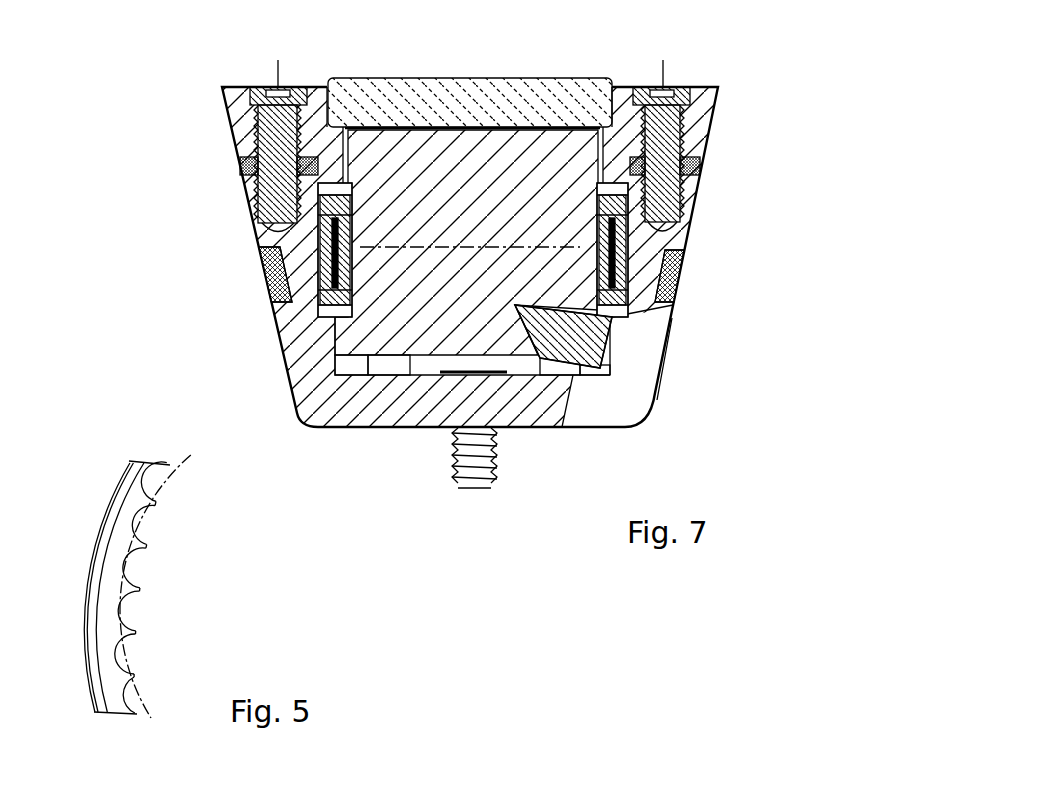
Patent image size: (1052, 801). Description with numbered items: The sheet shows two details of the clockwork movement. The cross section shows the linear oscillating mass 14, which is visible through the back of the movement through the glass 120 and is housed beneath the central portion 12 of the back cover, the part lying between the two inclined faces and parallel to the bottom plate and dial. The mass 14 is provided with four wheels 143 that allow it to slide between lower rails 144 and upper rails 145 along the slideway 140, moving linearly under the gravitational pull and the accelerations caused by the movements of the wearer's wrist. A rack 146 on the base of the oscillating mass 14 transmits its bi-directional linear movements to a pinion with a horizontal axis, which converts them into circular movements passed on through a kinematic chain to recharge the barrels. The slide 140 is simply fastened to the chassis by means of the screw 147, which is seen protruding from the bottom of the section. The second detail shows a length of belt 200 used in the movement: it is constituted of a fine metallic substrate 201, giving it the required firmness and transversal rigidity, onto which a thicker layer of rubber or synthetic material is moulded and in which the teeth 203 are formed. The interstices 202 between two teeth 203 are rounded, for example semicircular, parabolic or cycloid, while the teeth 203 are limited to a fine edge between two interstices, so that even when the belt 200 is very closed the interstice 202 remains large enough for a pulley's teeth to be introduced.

In FIG. 7, the central portion of the back cover 12 is at (705, 113).
In FIG. 7, the oscillating mass 14 is at (454, 294).
In FIG. 7, the glass 120 is at (530, 95).
In FIG. 7, the slideway 140 is at (383, 412).
In FIG. 7, the wheels 143 is at (310, 257).
In FIG. 7, the lower rails 144 is at (320, 303).
In FIG. 7, the upper rails 145 is at (262, 190).
In FIG. 7, the rack 146 is at (612, 363).
In FIG. 7, the screw 147 is at (485, 487).
In FIG. 5, the belt 200 is at (118, 493).
In FIG. 5, the metallic substrate 201 is at (112, 572).
In FIG. 5, the interstices 202 is at (132, 603).
In FIG. 5, the teeth 203 is at (137, 627).